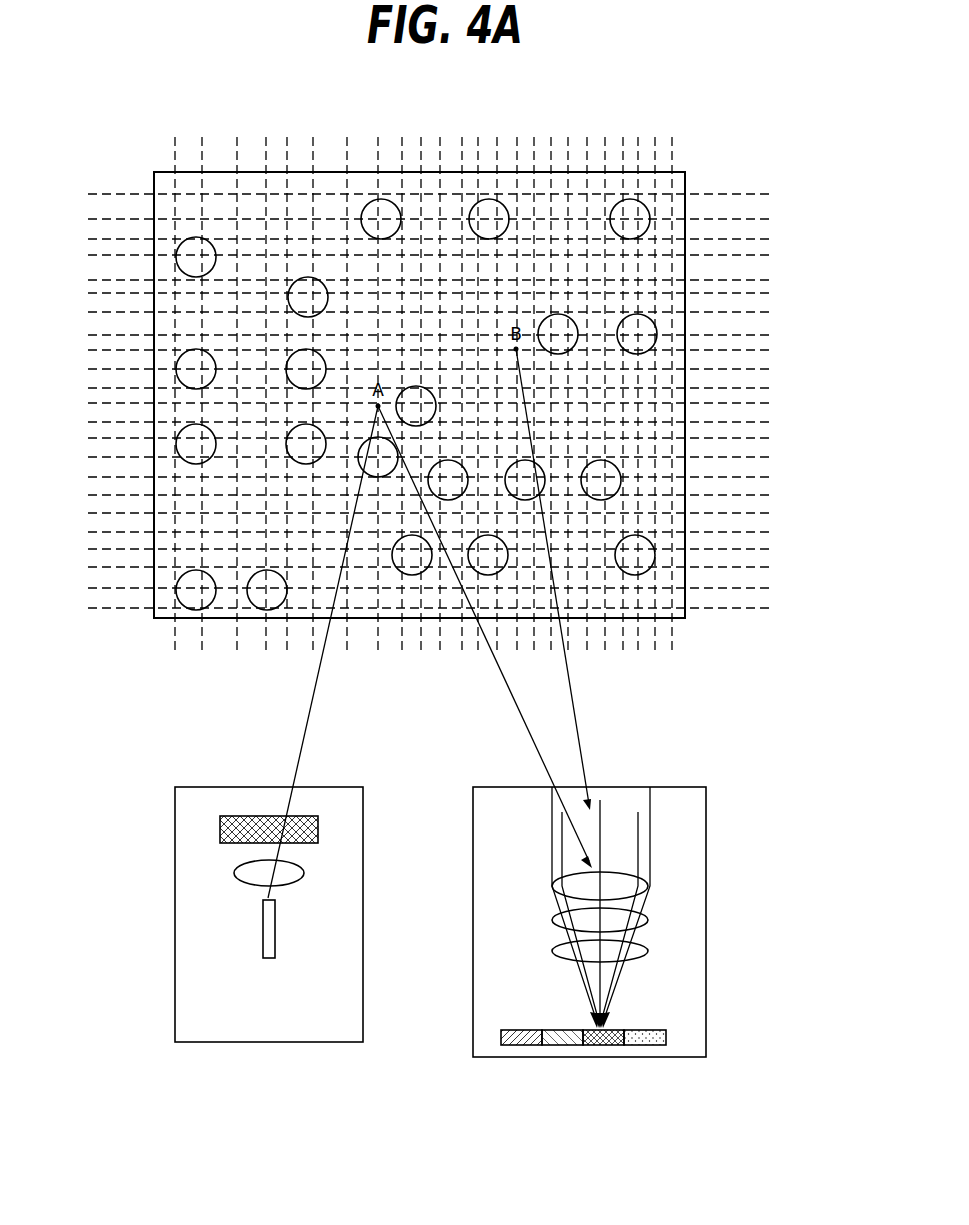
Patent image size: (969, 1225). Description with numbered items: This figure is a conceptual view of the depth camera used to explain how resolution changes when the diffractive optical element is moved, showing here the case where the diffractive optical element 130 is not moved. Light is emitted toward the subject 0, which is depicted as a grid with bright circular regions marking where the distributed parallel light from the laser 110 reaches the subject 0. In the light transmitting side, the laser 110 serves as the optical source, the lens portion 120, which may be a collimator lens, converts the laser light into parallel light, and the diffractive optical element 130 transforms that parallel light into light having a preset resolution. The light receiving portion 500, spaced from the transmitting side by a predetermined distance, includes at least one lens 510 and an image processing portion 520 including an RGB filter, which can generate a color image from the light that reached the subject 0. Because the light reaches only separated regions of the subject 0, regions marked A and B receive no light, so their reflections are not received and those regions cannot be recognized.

The subject 0 is at (130, 176).
The laser 110 is at (268, 917).
The lens portion 120 is at (240, 873).
The diffractive optical element 130 is at (226, 830).
The light receiving portion 500 is at (708, 970).
The lens 510 is at (654, 888).
The image processing portion 520 is at (640, 1037).